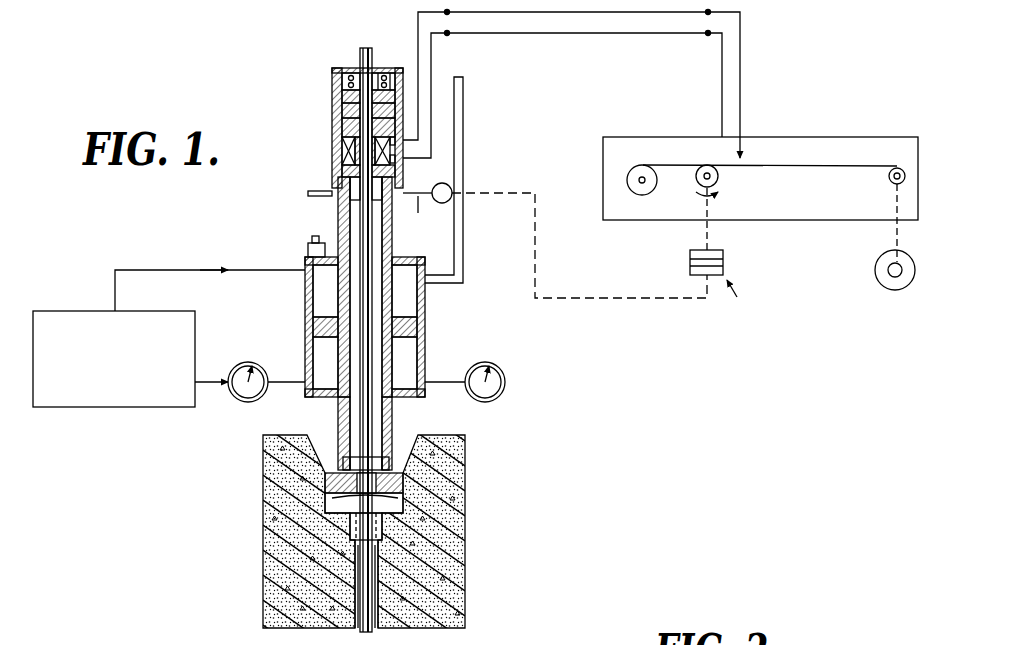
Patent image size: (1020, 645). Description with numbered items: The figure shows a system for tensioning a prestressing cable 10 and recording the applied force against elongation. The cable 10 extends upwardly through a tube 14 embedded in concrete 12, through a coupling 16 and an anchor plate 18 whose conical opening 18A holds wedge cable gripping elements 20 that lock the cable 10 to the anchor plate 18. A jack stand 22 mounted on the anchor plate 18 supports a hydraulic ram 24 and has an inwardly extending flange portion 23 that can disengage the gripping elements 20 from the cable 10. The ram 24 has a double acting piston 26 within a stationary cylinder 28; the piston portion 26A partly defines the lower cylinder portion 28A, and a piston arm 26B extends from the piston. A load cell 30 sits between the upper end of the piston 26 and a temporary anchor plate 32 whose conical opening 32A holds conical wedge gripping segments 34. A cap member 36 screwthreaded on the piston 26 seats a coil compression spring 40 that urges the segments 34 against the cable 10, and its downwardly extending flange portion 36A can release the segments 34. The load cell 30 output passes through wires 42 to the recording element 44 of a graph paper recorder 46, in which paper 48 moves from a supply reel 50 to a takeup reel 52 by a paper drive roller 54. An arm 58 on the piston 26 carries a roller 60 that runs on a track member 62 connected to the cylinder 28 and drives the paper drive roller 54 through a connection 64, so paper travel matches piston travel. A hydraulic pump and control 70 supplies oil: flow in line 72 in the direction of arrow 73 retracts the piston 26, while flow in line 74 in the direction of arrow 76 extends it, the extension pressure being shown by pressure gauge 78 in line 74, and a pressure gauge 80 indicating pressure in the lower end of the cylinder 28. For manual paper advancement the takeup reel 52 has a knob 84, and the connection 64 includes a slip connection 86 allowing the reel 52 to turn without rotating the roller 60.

The prestressing cable 10 is at (363, 48).
The concrete 12 is at (455, 602).
The tube 14 is at (384, 608).
The coupling 16 is at (378, 520).
The anchor plate 18 is at (400, 477).
The conical opening 18A is at (403, 492).
The wedge cable gripping elements 20 is at (352, 484).
The jack stand 22 is at (338, 405).
The inwardly extending flange portion 23 is at (388, 452).
The hydraulic ram 24 is at (304, 291).
The double acting piston 26 is at (340, 216).
The piston portion 26A is at (418, 330).
The piston arm 26B is at (308, 193).
The stationary cylinder 28 is at (425, 305).
The lower cylinder portion 28A is at (410, 352).
The load cell 30 is at (345, 158).
The temporary anchor plate 32 is at (345, 130).
The conical opening 32A is at (340, 106).
The conical wedge gripping segments 34 is at (352, 95).
The cap member 36 is at (347, 75).
The downwardly extending flange portion 36A is at (378, 72).
The coil compression spring 40 is at (340, 68).
The wires 42 is at (575, 35).
The recording element 44 is at (744, 158).
The graph paper recorder 46 is at (688, 132).
The paper 48 is at (802, 164).
The supply reel 50 is at (650, 192).
The takeup reel 52 is at (890, 180).
The paper drive roller 54 is at (716, 182).
The arm 58 is at (431, 214).
The roller 60 is at (437, 185).
The track member 62 is at (464, 125).
The connection 64 is at (656, 300).
The hydraulic pump and control 70 is at (108, 408).
The line 72 is at (146, 268).
The arrow 73 is at (222, 274).
The line 74 is at (205, 390).
The arrow 76 is at (226, 374).
The pressure gauge 78 is at (252, 372).
The pressure gauge 80 is at (505, 380).
The knob 84 is at (875, 271).
The slip connection 86 is at (725, 258).